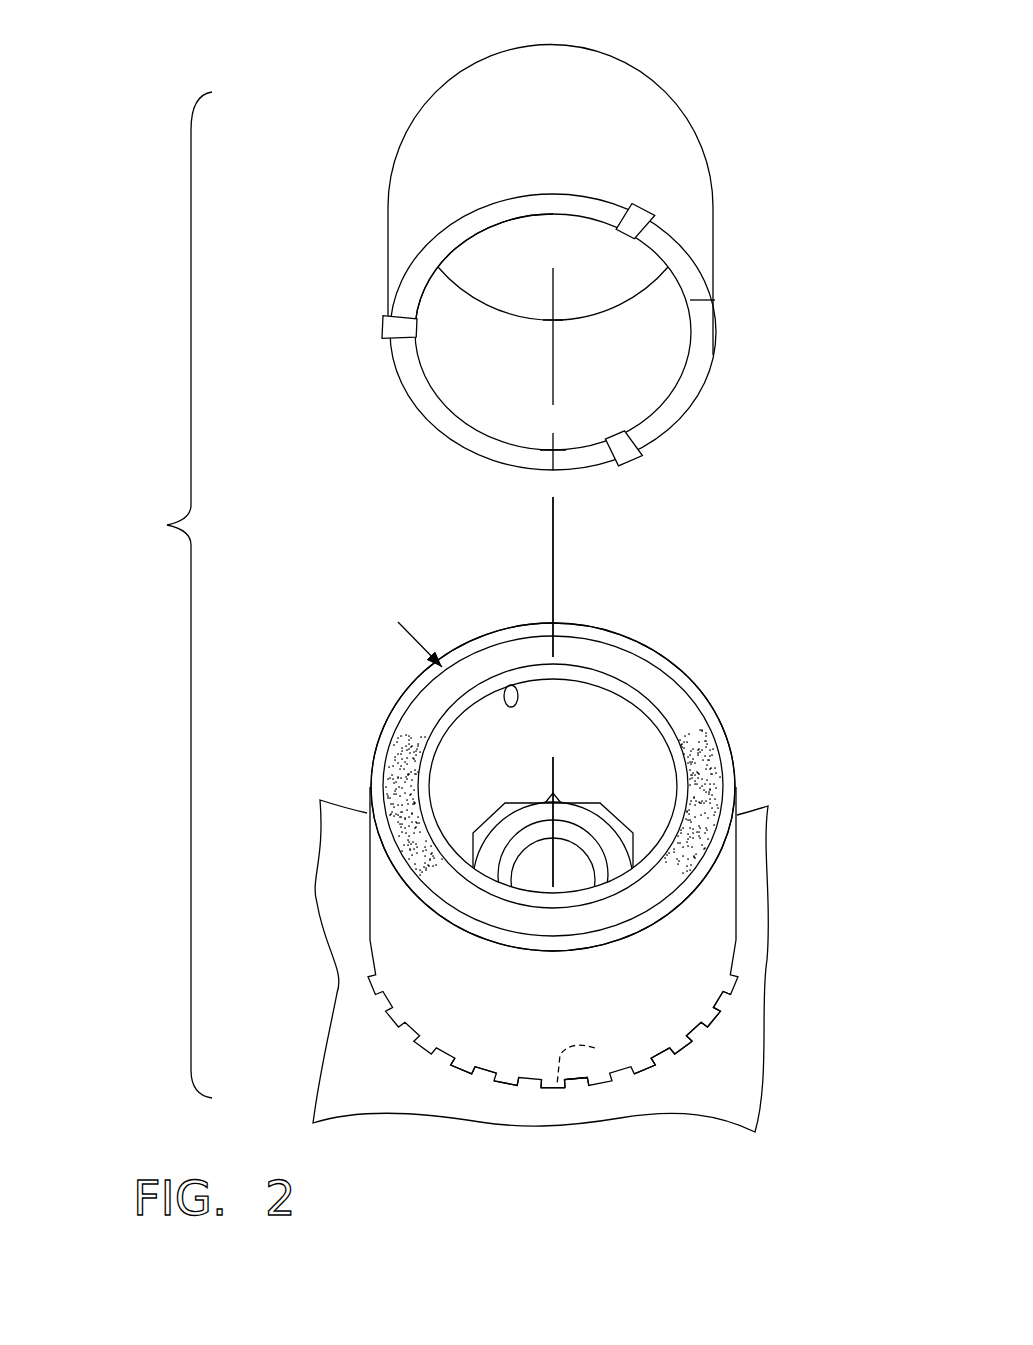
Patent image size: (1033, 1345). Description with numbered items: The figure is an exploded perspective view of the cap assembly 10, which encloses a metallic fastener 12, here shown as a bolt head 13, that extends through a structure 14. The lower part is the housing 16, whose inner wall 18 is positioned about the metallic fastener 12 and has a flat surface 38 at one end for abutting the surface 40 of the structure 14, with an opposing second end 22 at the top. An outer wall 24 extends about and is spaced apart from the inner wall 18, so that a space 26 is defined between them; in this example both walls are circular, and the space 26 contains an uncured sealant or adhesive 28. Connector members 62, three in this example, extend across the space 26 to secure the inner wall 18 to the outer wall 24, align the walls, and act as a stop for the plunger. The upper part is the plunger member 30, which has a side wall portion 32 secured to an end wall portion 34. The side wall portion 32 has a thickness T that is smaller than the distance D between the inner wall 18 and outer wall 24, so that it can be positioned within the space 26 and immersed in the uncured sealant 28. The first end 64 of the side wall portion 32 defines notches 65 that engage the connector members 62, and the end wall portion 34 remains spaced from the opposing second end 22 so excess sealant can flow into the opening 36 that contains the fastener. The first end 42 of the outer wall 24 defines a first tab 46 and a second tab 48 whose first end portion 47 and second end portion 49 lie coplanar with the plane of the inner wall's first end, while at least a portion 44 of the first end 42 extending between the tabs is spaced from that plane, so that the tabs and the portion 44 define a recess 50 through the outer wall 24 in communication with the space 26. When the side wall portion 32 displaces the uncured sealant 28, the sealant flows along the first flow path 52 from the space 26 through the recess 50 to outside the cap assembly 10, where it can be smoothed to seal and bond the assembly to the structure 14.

The cap assembly 10 is at (137, 465).
The metallic fastener 12 is at (590, 812).
The bolt head 13 is at (540, 812).
The structure 14 is at (745, 1018).
The housing 16 is at (636, 610).
The inner wall 18 is at (506, 686).
The opposing second end 22 is at (690, 740).
The outer wall 24 is at (384, 745).
The space 26 is at (636, 672).
The uncured sealant or adhesive 28 is at (710, 768).
The plunger member 30 is at (745, 44).
The side wall portion 32 is at (690, 183).
The end wall portion 34 is at (567, 226).
The opening 36 is at (582, 712).
The flat surface 38 is at (437, 246).
The surface 40 is at (718, 1088).
The first end 42 is at (680, 1033).
The portion 44 is at (392, 993).
The first tab 46 is at (521, 1084).
The first end portion 47 is at (548, 1087).
The second tab 48 is at (572, 1092).
The second end portion 49 is at (580, 1088).
The recess 50 is at (556, 1095).
The first flow path 52 is at (592, 1058).
The connector member 62 is at (413, 834).
The first end 64 is at (690, 385).
The notches 65 is at (655, 218).
The distance D is at (395, 630).
The thickness T is at (712, 283).